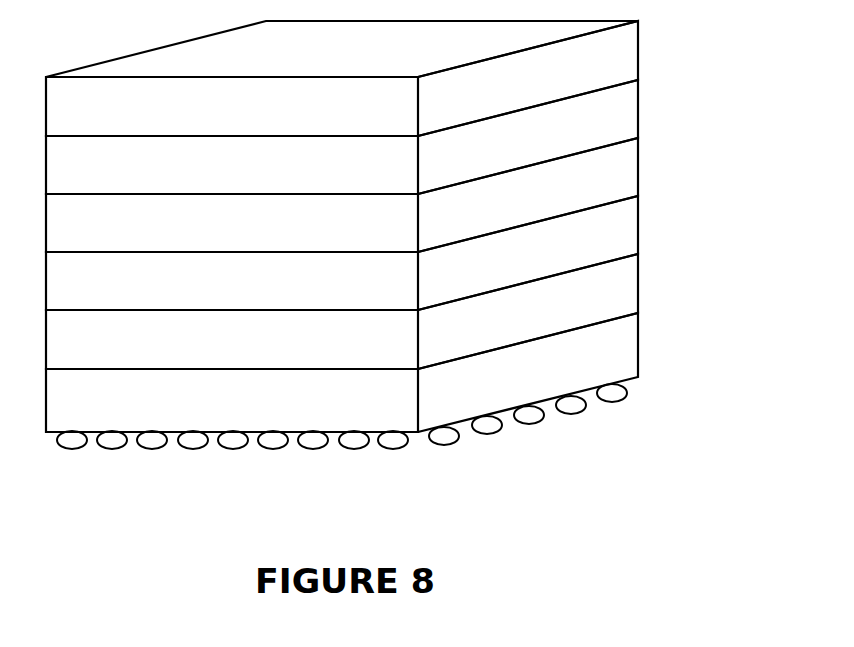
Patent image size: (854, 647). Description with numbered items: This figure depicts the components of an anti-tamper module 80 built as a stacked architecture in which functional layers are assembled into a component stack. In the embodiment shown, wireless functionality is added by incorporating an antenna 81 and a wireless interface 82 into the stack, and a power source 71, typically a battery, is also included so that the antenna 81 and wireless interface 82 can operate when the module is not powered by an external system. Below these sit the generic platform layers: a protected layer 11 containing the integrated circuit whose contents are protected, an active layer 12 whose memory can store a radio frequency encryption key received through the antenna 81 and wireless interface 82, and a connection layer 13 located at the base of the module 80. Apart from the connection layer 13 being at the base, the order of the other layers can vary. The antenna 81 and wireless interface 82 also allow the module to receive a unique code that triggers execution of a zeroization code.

The anti-tamper module 80 is at (76, 30).
The antenna 81 is at (614, 60).
The wireless interface 82 is at (623, 127).
The power source 71 is at (612, 185).
The protected layer 11 is at (615, 243).
The active layer 12 is at (627, 298).
The connection layer 13 is at (618, 355).